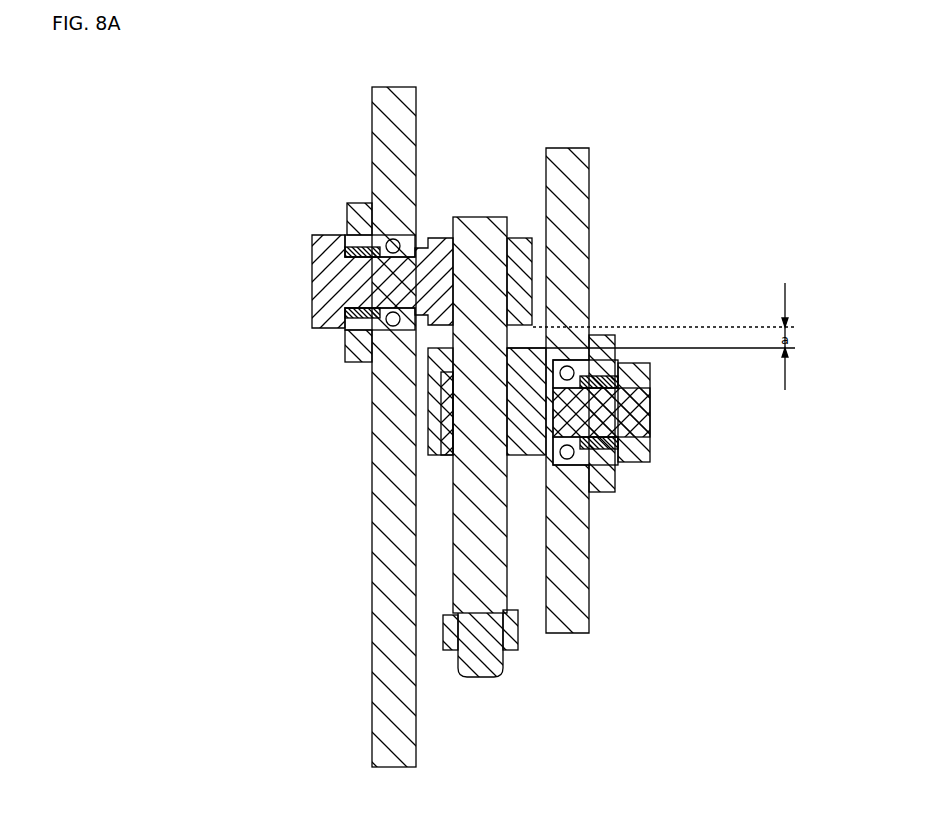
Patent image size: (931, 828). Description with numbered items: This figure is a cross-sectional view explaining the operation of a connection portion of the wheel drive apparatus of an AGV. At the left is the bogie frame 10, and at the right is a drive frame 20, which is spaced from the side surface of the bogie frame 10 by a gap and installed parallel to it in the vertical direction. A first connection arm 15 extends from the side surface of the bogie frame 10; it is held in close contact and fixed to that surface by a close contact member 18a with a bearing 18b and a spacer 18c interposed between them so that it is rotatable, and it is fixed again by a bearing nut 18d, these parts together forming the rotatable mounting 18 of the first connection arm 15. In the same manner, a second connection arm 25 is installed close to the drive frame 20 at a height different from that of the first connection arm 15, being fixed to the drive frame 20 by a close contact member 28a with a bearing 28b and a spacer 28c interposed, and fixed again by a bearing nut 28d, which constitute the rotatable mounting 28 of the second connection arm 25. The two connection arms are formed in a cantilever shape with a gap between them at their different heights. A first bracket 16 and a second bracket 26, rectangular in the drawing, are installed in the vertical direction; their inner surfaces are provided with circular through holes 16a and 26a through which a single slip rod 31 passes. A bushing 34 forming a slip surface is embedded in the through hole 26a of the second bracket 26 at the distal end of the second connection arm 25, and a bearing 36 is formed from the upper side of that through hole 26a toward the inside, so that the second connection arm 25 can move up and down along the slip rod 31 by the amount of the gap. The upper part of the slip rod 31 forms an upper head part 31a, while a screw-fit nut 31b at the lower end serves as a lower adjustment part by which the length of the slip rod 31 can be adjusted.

The bogie frame 10 is at (370, 177).
The first connection arm 15 is at (310, 257).
The first bracket 16 is at (486, 268).
The through hole 16a is at (493, 305).
The bearing 18 is at (277, 333).
The close contact member 18a is at (347, 360).
The bearing 18b is at (343, 350).
The spacer 18c is at (343, 329).
The bearing nut 18d is at (312, 305).
The drive frame 20 is at (588, 197).
The second connection arm 25 is at (647, 417).
The second bracket 26 is at (606, 450).
The through hole 26a is at (526, 401).
The bearing 28 is at (686, 423).
The close contact member 28a is at (676, 412).
The bearing 28b is at (650, 453).
The spacer 28c is at (650, 413).
The bearing nut 28d is at (650, 370).
The slip rod 31 is at (388, 419).
The upper head part 31a is at (462, 217).
The screw-fit nut 31b is at (443, 647).
The bushing 34 is at (364, 418).
The bearing 36 is at (437, 365).